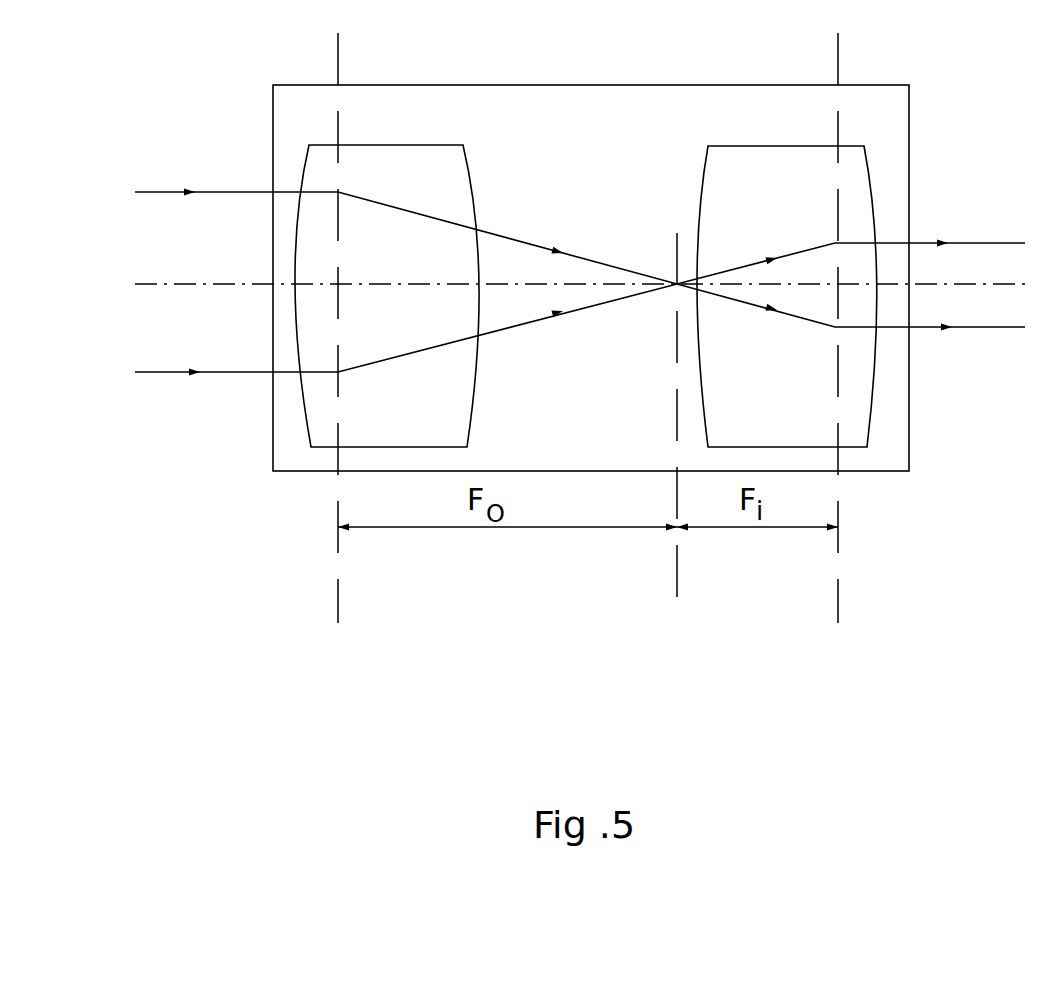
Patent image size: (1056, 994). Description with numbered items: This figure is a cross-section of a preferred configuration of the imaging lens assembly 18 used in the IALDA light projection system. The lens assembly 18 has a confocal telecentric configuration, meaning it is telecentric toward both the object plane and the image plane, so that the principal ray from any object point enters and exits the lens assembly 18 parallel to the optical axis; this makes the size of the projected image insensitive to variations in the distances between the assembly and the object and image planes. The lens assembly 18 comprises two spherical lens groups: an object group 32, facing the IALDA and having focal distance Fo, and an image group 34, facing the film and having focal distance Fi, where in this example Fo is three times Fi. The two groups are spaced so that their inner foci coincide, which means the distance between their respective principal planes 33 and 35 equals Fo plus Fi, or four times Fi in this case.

The imaging lens assembly 18 is at (663, 85).
The object group 32 is at (440, 157).
The image group 34 is at (854, 172).
The principal plane of the object group 33 is at (340, 561).
The principal plane of the image group 35 is at (839, 483).